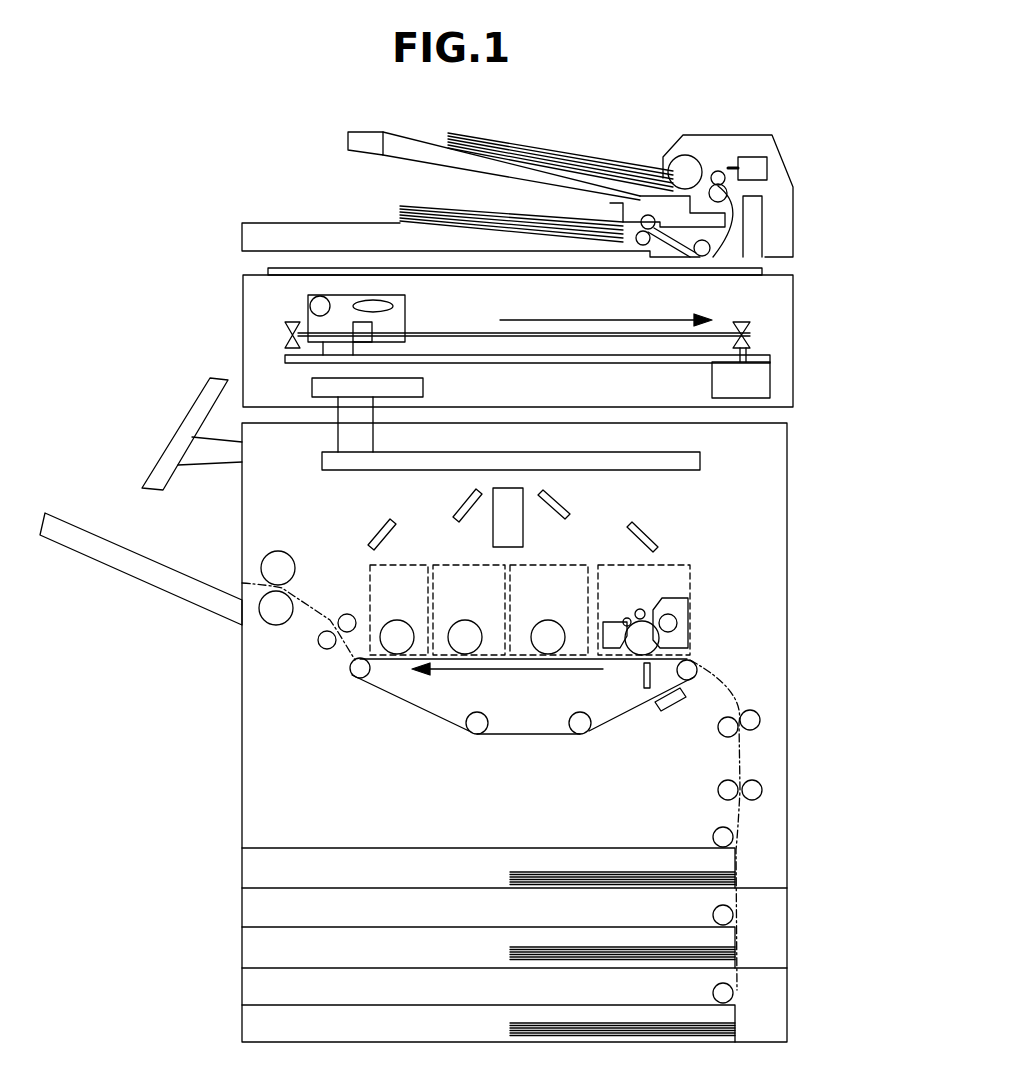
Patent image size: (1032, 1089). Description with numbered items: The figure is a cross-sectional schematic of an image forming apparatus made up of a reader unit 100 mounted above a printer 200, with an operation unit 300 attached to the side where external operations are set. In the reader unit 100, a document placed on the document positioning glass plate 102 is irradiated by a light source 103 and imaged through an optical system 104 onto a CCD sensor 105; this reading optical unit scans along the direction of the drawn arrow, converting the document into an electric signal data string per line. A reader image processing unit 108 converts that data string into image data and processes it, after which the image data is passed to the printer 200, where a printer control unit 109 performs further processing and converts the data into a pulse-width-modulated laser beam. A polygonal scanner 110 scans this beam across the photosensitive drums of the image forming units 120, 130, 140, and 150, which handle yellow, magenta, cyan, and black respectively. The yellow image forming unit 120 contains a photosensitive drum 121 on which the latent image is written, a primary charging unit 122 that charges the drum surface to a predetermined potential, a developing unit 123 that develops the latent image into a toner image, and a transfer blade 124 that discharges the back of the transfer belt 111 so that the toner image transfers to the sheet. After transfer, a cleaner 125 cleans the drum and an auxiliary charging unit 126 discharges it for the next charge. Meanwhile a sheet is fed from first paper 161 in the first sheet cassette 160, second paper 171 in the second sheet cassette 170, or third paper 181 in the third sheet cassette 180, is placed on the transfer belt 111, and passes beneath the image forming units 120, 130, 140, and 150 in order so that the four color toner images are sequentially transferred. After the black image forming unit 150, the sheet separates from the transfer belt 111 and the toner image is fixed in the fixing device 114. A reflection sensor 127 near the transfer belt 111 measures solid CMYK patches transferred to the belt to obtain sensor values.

The reader unit 100 is at (793, 305).
The document positioning glass plate 102 is at (762, 268).
The light source 103 is at (308, 308).
The optical system 104 is at (390, 300).
The CCD sensor 105 is at (373, 328).
The reader image processing unit 108 is at (312, 388).
The printer control unit 109 is at (700, 460).
The polygonal scanner 110 is at (523, 490).
The transfer belt 111 is at (622, 718).
The fixing device 114 is at (262, 560).
The yellow image forming unit 120 is at (665, 563).
The photosensitive drum 121 is at (662, 638).
The primary charging unit 122 is at (640, 609).
The developing unit 123 is at (690, 606).
The transfer blade 124 is at (644, 680).
The cleaner 125 is at (603, 632).
The auxiliary charging unit 126 is at (623, 618).
The reflection sensor 127 is at (682, 703).
The magenta image forming unit 130 is at (565, 560).
The cyan image forming unit 140 is at (452, 560).
The black image forming unit 150 is at (382, 563).
The first sheet cassette 160 is at (735, 862).
The first paper 161 is at (735, 882).
The second sheet cassette 170 is at (735, 940).
The second paper 171 is at (735, 960).
The third sheet cassette 180 is at (735, 1013).
The third paper 181 is at (735, 1035).
The printer 200 is at (788, 505).
The operation unit 300 is at (192, 403).